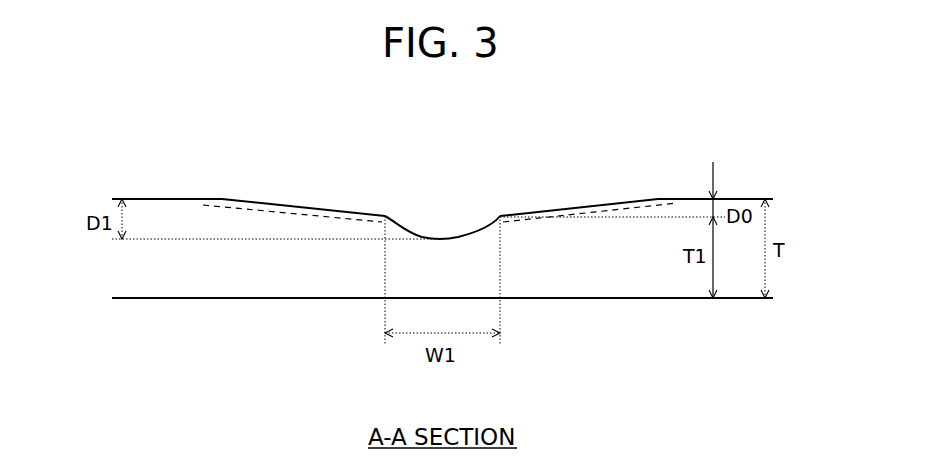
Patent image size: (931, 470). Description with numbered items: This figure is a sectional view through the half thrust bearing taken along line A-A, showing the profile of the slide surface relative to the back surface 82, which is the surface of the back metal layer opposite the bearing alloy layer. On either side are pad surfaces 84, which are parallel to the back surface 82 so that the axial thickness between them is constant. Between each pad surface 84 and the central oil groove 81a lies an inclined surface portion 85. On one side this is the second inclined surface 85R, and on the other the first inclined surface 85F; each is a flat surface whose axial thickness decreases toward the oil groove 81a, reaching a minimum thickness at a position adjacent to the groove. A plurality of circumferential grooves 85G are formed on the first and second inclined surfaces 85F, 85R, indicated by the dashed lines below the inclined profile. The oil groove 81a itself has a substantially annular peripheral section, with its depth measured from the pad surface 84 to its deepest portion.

The pad surface 84 is at (140, 198).
The inclined surface portion 85 is at (440, 175).
The second inclined surface 85R is at (298, 205).
The first inclined surface 85F is at (533, 212).
The circumferential grooves 85G is at (353, 208).
The oil groove 81a is at (412, 235).
The back surface 82 is at (665, 299).